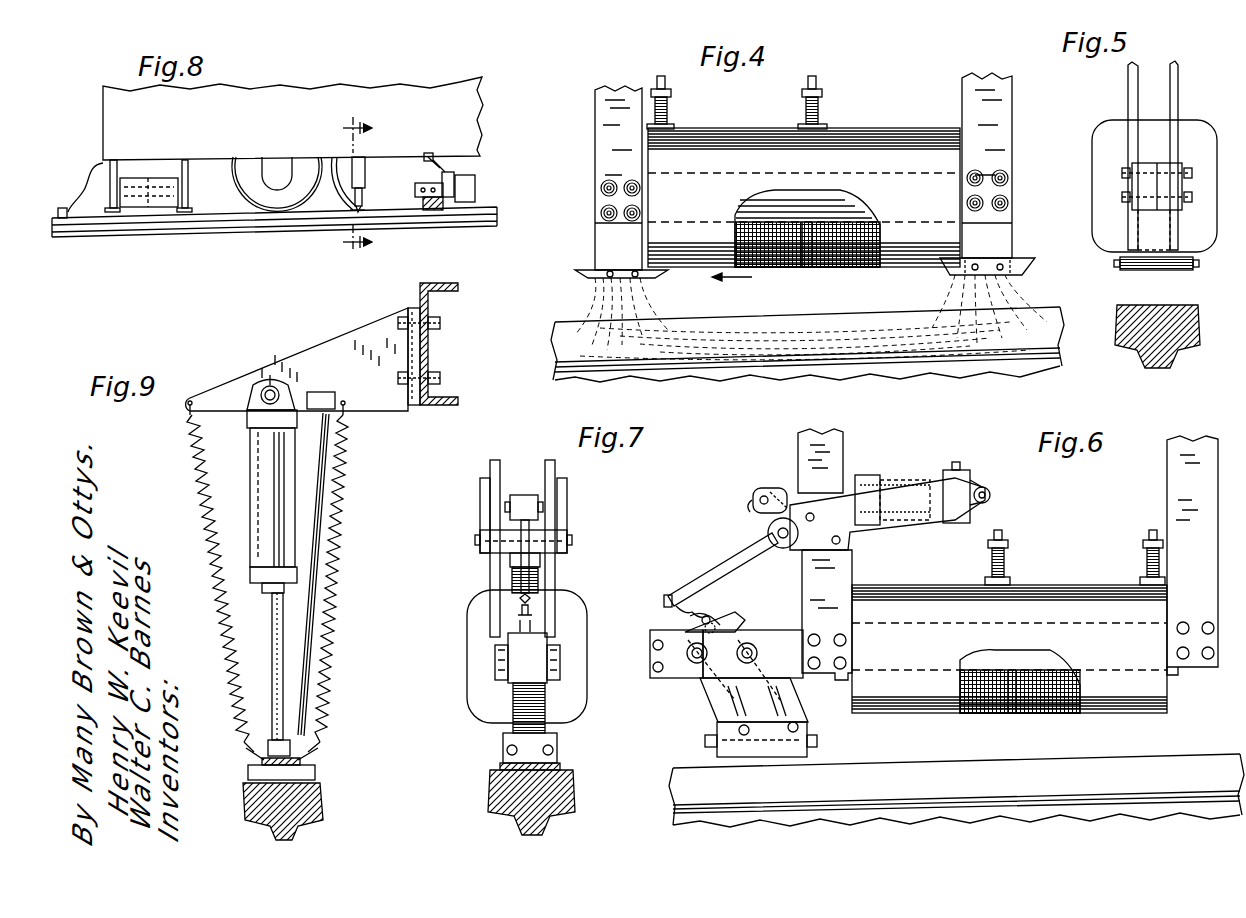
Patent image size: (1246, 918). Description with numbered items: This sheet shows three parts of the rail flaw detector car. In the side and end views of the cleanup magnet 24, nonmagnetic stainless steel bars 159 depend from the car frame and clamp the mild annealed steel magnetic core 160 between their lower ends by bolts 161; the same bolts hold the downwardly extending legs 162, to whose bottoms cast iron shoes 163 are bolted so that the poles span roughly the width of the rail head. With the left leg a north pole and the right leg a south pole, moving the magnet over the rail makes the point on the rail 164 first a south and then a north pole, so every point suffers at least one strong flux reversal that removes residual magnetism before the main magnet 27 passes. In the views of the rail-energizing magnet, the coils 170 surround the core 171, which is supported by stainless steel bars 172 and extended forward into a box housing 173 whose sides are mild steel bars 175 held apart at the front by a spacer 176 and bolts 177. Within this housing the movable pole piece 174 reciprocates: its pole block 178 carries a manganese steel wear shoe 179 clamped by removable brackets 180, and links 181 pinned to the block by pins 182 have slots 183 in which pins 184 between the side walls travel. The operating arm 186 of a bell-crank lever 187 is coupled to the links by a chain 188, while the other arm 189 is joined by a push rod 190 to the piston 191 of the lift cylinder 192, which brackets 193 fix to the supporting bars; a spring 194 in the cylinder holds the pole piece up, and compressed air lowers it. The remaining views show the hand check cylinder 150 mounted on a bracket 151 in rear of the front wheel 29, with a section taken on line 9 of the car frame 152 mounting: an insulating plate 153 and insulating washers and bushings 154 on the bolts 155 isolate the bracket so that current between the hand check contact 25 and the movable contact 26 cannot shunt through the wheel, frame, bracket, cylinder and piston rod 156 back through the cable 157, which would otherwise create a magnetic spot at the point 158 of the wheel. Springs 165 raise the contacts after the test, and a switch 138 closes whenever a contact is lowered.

In FIG. 8, the section line 9 is at (357, 182).
In FIG. 8, the cleanup magnet 24 is at (140, 210).
In FIG. 4, the cleanup magnet 24 is at (872, 127).
In FIG. 5, the cleanup magnet 24 is at (1102, 128).
In FIG. 8, the hand check contact 25 is at (362, 209).
In FIG. 9, the hand check contact 25 is at (300, 771).
In FIG. 8, the movable contact 26 is at (62, 207).
In FIG. 8, the main magnet 27 is at (478, 190).
In FIG. 8, the front wheel 29 is at (254, 186).
In FIG. 9, the switch 138 is at (319, 392).
In FIG. 9, the hand check cylinder 150 is at (262, 470).
In FIG. 9, the bracket 151 is at (313, 350).
In FIG. 9, the car frame 152 is at (446, 284).
In FIG. 9, the insulating plate 153 is at (428, 350).
In FIG. 9, the insulating washers and bushings 154 is at (404, 372).
In FIG. 9, the bolts 155 is at (440, 380).
In FIG. 9, the piston rod 156 is at (273, 625).
In FIG. 8, the cable 157 is at (338, 196).
In FIG. 8, the point 158 is at (282, 226).
In FIG. 4, the nonmagnetic stainless steel bars 159 is at (598, 95).
In FIG. 5, the nonmagnetic stainless steel bars 159 is at (1130, 84).
In FIG. 4, the magnetic core 160 is at (842, 205).
In FIG. 5, the magnetic core 160 is at (1165, 165).
In FIG. 4, the bolts 161 is at (600, 187).
In FIG. 5, the bolts 161 is at (1122, 196).
In FIG. 4, the legs 162 is at (603, 240).
In FIG. 5, the legs 162 is at (1142, 230).
In FIG. 4, the cast iron shoes 163 is at (590, 272).
In FIG. 5, the cast iron shoes 163 is at (1150, 270).
In FIG. 4, the point on the rail 164 is at (585, 330).
In FIG. 9, the springs 165 is at (205, 535).
In FIG. 6, the springs 165 is at (730, 624).
In FIG. 7, the coils 170 is at (480, 605).
In FIG. 6, the coils 170 is at (940, 590).
In FIG. 6, the core 171 is at (1035, 655).
In FIG. 7, the stainless steel bars 172 is at (548, 462).
In FIG. 6, the stainless steel bars 172 is at (799, 443).
In FIG. 6, the box housing 173 is at (778, 636).
In FIG. 7, the movable pole piece 174 is at (562, 740).
In FIG. 6, the movable pole piece 174 is at (808, 726).
In FIG. 7, the mild steel bars 175 is at (500, 640).
In FIG. 6, the mild steel bars 175 is at (650, 652).
In FIG. 7, the spacer 176 is at (522, 660).
In FIG. 6, the spacer 176 is at (652, 676).
In FIG. 6, the bolts 177 is at (658, 640).
In FIG. 7, the pole block 178 is at (503, 738).
In FIG. 6, the pole block 178 is at (810, 746).
In FIG. 7, the wear shoe 179 is at (505, 768).
In FIG. 6, the wear shoe 179 is at (800, 762).
In FIG. 7, the removable brackets 180 is at (508, 748).
In FIG. 6, the removable brackets 180 is at (716, 740).
In FIG. 7, the links 181 is at (520, 703).
In FIG. 6, the links 181 is at (718, 700).
In FIG. 6, the pins 182 is at (792, 732).
In FIG. 6, the slots 183 is at (782, 690).
In FIG. 6, the pins 184 is at (697, 663).
In FIG. 7, the operating arm 186 is at (540, 575).
In FIG. 6, the operating arm 186 is at (722, 573).
In FIG. 7, the bell-crank lever 187 is at (548, 583).
In FIG. 6, the bell-crank lever 187 is at (766, 551).
In FIG. 6, the chain 188 is at (706, 606).
In FIG. 7, the other arm 189 is at (528, 525).
In FIG. 6, the other arm 189 is at (758, 502).
In FIG. 7, the push rod 190 is at (538, 500).
In FIG. 6, the push rod 190 is at (797, 483).
In FIG. 6, the piston 191 is at (925, 470).
In FIG. 6, the lift cylinder 192 is at (950, 472).
In FIG. 7, the brackets 193 is at (481, 485).
In FIG. 6, the brackets 193 is at (856, 535).
In FIG. 6, the spring 194 is at (875, 477).